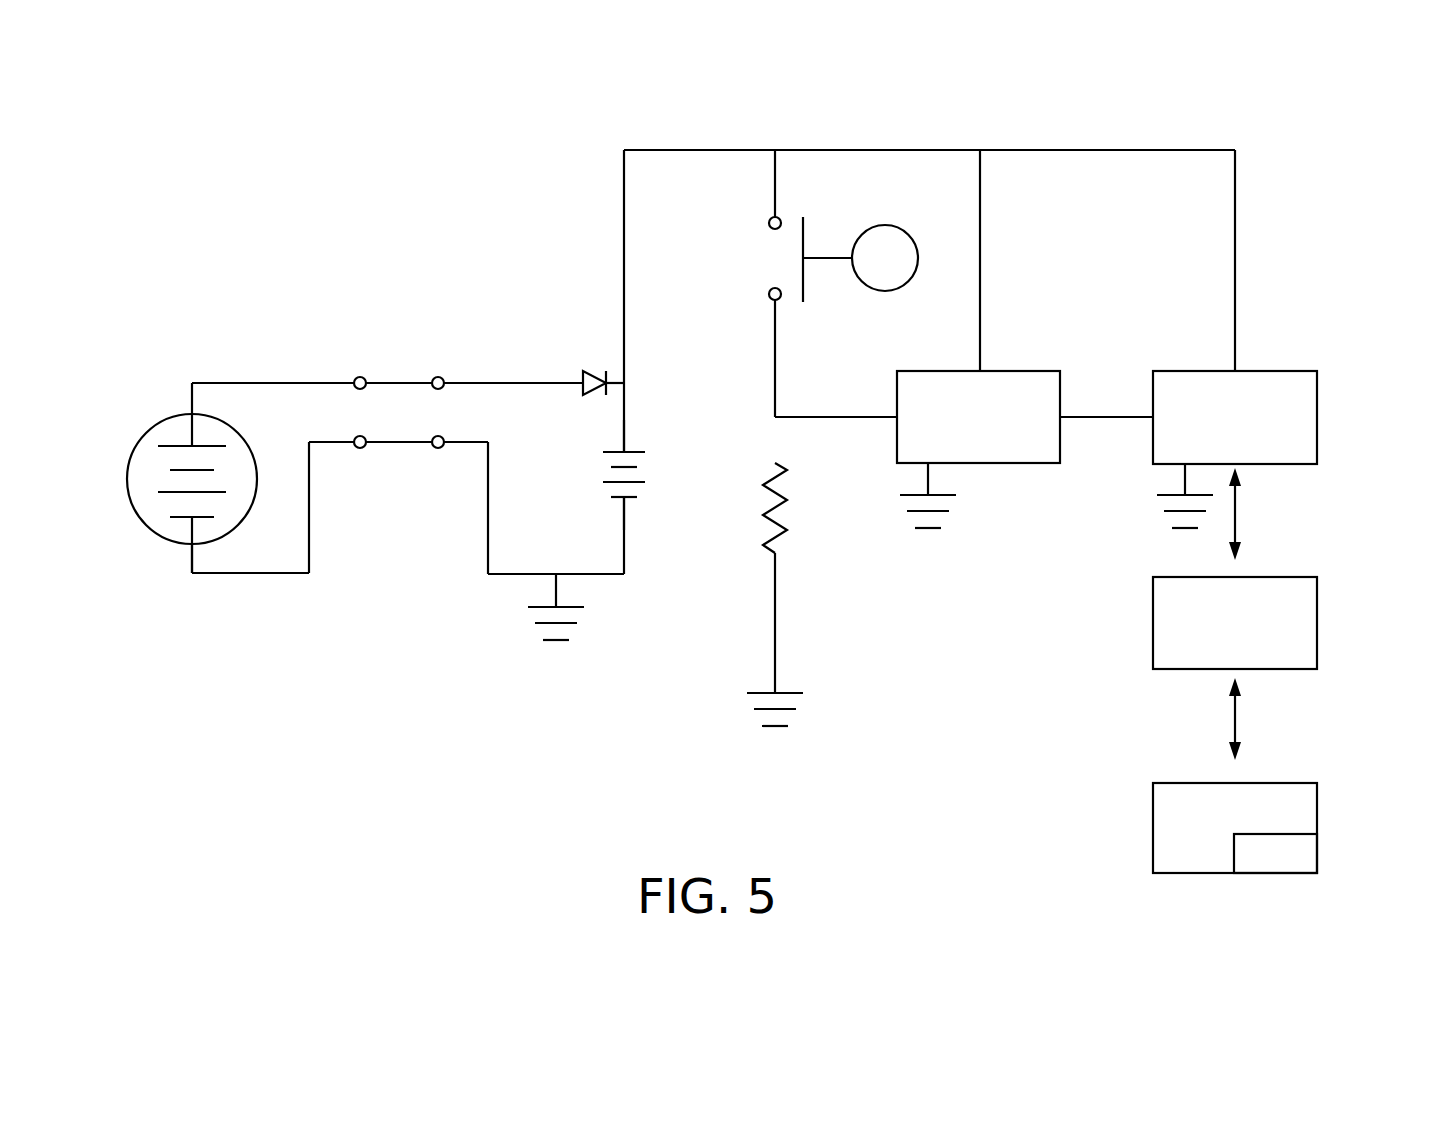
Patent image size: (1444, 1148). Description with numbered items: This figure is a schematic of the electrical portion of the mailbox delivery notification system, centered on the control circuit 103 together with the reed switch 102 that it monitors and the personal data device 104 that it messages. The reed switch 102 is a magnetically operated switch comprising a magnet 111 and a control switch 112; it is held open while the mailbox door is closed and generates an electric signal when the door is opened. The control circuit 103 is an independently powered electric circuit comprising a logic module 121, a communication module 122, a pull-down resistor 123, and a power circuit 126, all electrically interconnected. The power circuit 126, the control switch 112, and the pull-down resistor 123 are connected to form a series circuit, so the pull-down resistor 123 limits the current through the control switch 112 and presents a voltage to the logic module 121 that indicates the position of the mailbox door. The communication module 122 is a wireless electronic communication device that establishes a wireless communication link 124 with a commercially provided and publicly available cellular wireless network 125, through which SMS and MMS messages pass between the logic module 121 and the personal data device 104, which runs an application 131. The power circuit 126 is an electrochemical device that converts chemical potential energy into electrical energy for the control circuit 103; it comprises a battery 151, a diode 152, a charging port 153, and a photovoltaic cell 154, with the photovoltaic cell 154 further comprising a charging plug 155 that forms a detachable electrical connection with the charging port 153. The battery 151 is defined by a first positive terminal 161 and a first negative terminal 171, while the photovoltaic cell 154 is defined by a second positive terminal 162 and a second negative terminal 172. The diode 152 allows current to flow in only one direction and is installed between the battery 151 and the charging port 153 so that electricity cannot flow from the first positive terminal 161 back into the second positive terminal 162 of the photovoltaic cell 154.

The reed switch 102 is at (806, 222).
The control circuit 103 is at (552, 765).
The personal data device 104 is at (1308, 800).
The magnet 111 is at (893, 227).
The control switch 112 is at (773, 258).
The logic module 121 is at (1040, 371).
The communication module 122 is at (1318, 417).
The pull-down resistor 123 is at (790, 520).
The wireless communication link 124 is at (1237, 513).
The commercially provided and publicly available cellular wireless network 125 is at (1318, 622).
The power circuit 126 is at (390, 566).
The application 131 is at (1310, 860).
The battery 151 is at (595, 472).
The diode 152 is at (590, 370).
The charging port 153 is at (438, 377).
The photovoltaic cell 154 is at (150, 503).
The charging plug 155 is at (360, 377).
The first positive terminal 161 is at (627, 450).
The second positive terminal 162 is at (190, 414).
The first negative terminal 171 is at (627, 510).
The second negative terminal 172 is at (190, 543).